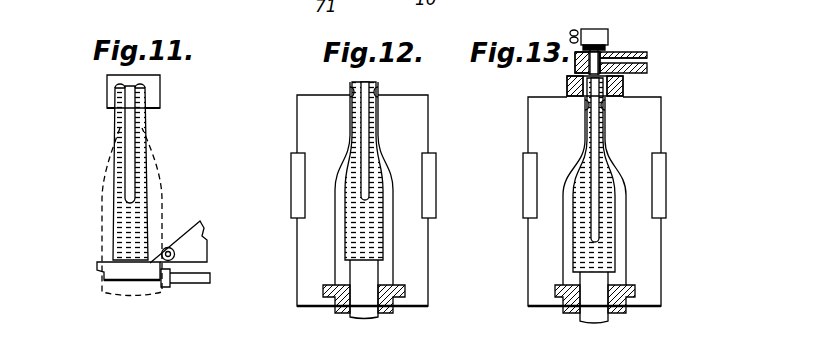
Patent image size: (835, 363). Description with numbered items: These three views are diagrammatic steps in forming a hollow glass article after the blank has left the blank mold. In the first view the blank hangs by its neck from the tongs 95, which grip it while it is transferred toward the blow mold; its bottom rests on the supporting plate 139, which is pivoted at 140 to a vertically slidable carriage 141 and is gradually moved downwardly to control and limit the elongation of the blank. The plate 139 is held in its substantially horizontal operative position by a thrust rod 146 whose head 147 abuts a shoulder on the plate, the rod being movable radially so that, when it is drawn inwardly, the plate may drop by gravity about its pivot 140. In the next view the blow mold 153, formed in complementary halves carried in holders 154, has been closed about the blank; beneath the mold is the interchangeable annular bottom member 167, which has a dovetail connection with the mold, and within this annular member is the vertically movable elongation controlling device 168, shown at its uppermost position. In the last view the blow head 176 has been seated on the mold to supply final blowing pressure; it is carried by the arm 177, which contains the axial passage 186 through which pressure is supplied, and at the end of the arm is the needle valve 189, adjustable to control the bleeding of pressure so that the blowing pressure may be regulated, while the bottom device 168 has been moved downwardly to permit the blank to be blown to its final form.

In FIG. 11, the tongs 95 is at (160, 84).
In FIG. 11, the supporting plate 139 is at (112, 272).
In FIG. 11, the pivot 140 is at (170, 248).
In FIG. 11, the carriage 141 is at (192, 242).
In FIG. 11, the thrust rod 146 is at (185, 276).
In FIG. 11, the head 147 is at (168, 287).
In FIG. 12, the blow mold 153 is at (415, 247).
In FIG. 13, the blow mold 153 is at (650, 240).
In FIG. 12, the holder 154 is at (428, 175).
In FIG. 13, the holder 154 is at (668, 174).
In FIG. 12, the blow mold bottom member 167 is at (384, 313).
In FIG. 13, the blow mold bottom member 167 is at (618, 313).
In FIG. 12, the elongation controlling device 168 is at (358, 278).
In FIG. 13, the elongation controlling device 168 is at (590, 298).
In FIG. 13, the head 176 is at (555, 90).
In FIG. 13, the arm 177 is at (647, 73).
In FIG. 13, the passage 186 is at (647, 61).
In FIG. 13, the needle valve 189 is at (596, 35).